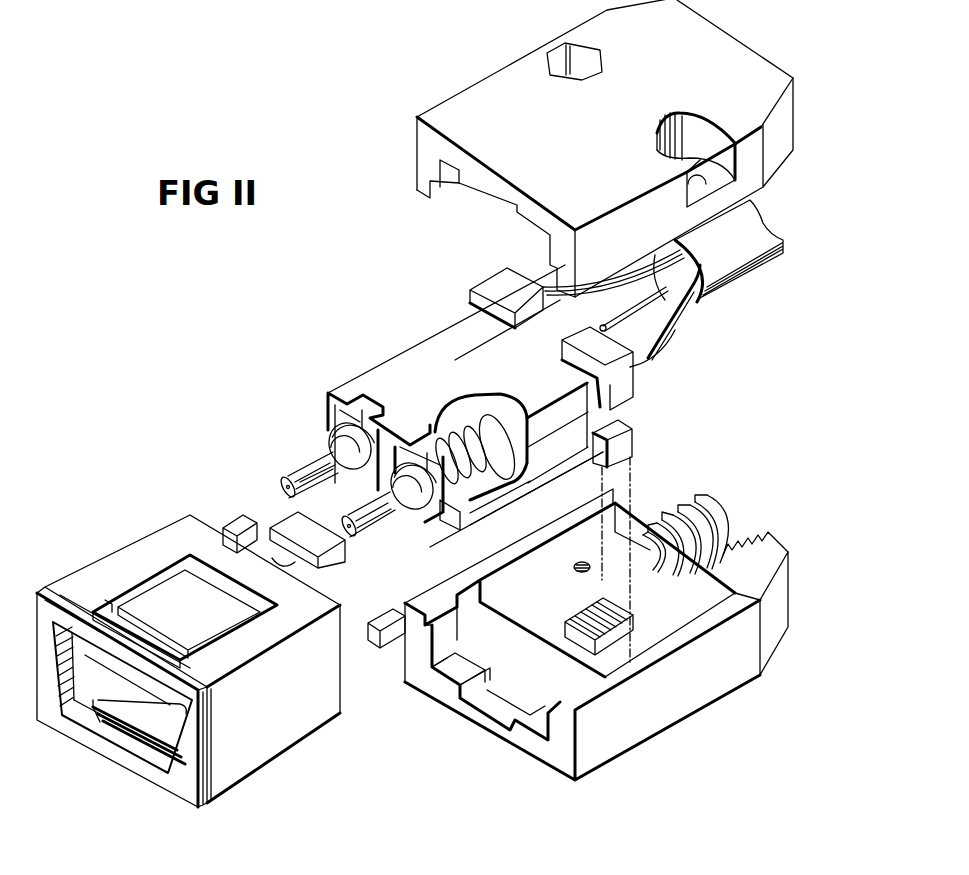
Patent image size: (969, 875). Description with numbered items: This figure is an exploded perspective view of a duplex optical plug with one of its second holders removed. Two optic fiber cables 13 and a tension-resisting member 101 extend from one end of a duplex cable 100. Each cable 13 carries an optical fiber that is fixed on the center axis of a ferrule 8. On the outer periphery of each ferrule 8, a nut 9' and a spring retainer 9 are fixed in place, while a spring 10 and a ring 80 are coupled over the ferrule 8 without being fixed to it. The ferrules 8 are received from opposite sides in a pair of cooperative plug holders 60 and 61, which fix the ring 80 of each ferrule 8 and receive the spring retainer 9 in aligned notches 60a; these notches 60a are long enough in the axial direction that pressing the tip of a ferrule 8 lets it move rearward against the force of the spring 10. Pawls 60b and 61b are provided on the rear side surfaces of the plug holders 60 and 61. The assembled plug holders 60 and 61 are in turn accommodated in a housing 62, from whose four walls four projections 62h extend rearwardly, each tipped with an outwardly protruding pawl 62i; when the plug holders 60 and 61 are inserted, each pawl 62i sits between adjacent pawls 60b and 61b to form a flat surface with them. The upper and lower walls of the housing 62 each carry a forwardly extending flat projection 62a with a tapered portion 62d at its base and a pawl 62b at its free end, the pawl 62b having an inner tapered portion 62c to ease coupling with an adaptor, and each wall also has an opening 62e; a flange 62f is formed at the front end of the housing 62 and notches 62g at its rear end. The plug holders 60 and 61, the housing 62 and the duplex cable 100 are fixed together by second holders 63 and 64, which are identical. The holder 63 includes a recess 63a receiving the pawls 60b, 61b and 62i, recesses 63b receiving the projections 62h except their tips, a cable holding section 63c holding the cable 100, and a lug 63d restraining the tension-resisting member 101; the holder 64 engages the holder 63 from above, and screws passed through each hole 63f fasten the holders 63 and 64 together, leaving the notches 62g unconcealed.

The ferrule 8 is at (307, 487).
The spring retainer 9 is at (349, 457).
The nut 9' is at (349, 477).
The spring 10 is at (450, 530).
The optic fiber cable 13 is at (543, 287).
The plug holder 60 is at (465, 401).
The notch 60a is at (372, 396).
The pawl 60b is at (493, 282).
The plug holder 61 is at (553, 453).
The pawl 61b is at (618, 444).
The housing 62 is at (220, 648).
The flat projection 62a is at (128, 580).
The pawl 62b is at (140, 722).
The tapered portion 62c is at (97, 707).
The tapered portion 62d is at (163, 605).
The opening 62e is at (133, 588).
The flange 62f is at (217, 797).
The notch 62g is at (197, 565).
The projection 62h is at (310, 575).
The pawl 62i is at (250, 555).
The second holder 63 is at (595, 641).
The recess 63a is at (527, 688).
The recess 63b is at (421, 623).
The cable holding section 63c is at (697, 527).
The lug 63d is at (612, 640).
The hole 63f is at (578, 560).
The second holder 64 is at (735, 74).
The ring 80 is at (478, 490).
The duplex cable 100 is at (725, 265).
The tension-resisting member 101 is at (659, 365).